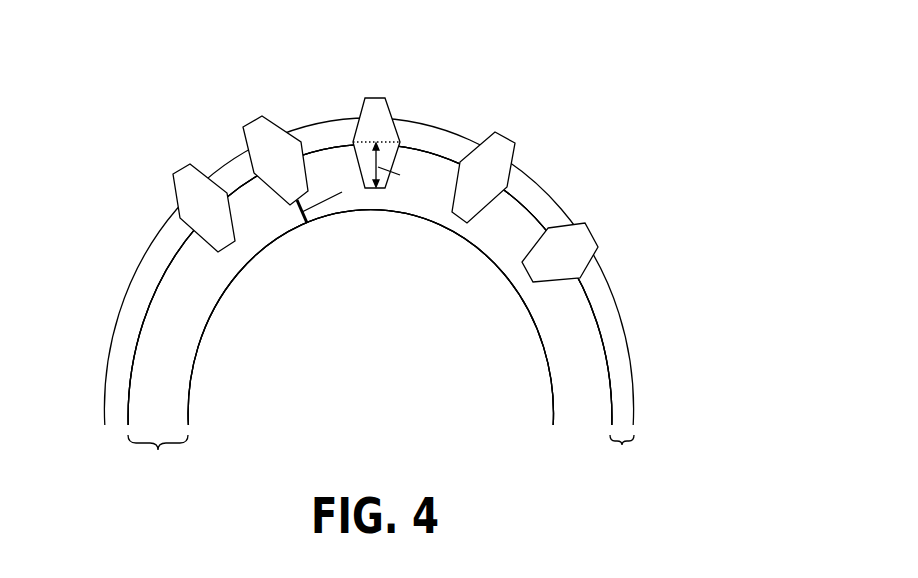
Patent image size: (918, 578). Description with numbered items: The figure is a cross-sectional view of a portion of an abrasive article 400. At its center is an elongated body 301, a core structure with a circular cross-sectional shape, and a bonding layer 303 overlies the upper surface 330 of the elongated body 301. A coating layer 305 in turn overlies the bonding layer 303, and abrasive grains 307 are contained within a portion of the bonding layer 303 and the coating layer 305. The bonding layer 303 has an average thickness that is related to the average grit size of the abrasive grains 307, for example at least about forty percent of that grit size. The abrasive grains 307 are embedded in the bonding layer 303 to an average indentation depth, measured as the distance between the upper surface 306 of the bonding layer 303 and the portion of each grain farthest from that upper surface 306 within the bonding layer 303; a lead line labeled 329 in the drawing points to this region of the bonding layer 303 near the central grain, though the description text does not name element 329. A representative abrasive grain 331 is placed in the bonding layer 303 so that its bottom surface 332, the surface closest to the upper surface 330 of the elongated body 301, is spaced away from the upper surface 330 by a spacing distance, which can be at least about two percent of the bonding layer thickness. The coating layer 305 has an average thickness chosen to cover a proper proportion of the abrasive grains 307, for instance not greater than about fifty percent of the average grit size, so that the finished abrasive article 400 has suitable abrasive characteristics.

The abrasive article 400 is at (415, 275).
The elongated body 301 is at (390, 386).
The bonding layer 303 is at (597, 402).
The coating layer 305 is at (622, 360).
The upper surface of the bonding layer 306 is at (542, 342).
The upper surface of the elongated body 330 is at (588, 287).
The hexagonal insert 329 is at (422, 148).
The representative abrasive grain 331 is at (262, 117).
The abrasive grains 307 is at (515, 150).
The bottom surface of the abrasive grain 332 is at (290, 220).